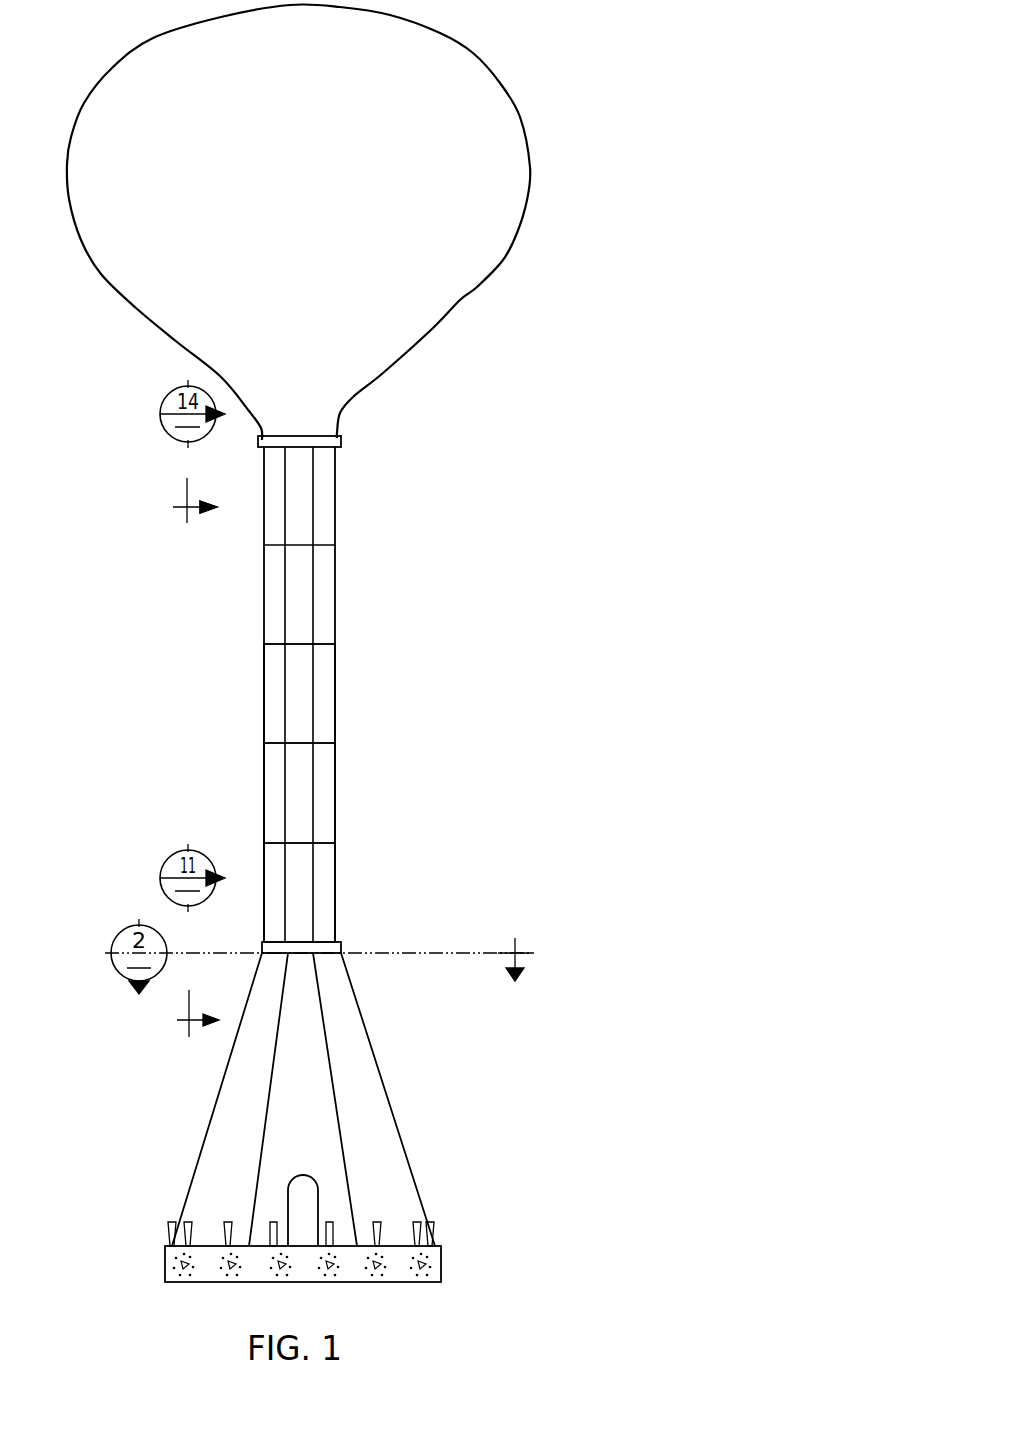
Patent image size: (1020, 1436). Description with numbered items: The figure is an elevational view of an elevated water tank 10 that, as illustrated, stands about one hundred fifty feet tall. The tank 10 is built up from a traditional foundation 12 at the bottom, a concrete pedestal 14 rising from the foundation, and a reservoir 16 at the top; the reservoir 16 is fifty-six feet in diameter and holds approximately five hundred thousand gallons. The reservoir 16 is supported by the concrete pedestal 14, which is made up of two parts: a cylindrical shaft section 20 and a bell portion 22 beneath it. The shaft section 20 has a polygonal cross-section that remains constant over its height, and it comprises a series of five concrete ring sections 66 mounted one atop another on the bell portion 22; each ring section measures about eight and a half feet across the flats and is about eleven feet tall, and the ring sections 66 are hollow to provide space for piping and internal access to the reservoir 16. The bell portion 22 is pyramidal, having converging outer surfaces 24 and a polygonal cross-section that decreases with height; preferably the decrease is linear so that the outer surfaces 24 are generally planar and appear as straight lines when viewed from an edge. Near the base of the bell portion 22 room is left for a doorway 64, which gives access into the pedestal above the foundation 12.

The elevated water tank 10 is at (394, 222).
The reservoir 16 is at (385, 312).
The concrete pedestal 14 is at (490, 694).
The cylindrical shaft section 20 is at (322, 692).
The concrete ring sections 66 is at (322, 771).
The bell portion 22 is at (355, 1075).
The converging outer surfaces 24 is at (243, 1115).
The doorway 64 is at (321, 1190).
The foundation 12 is at (442, 1263).